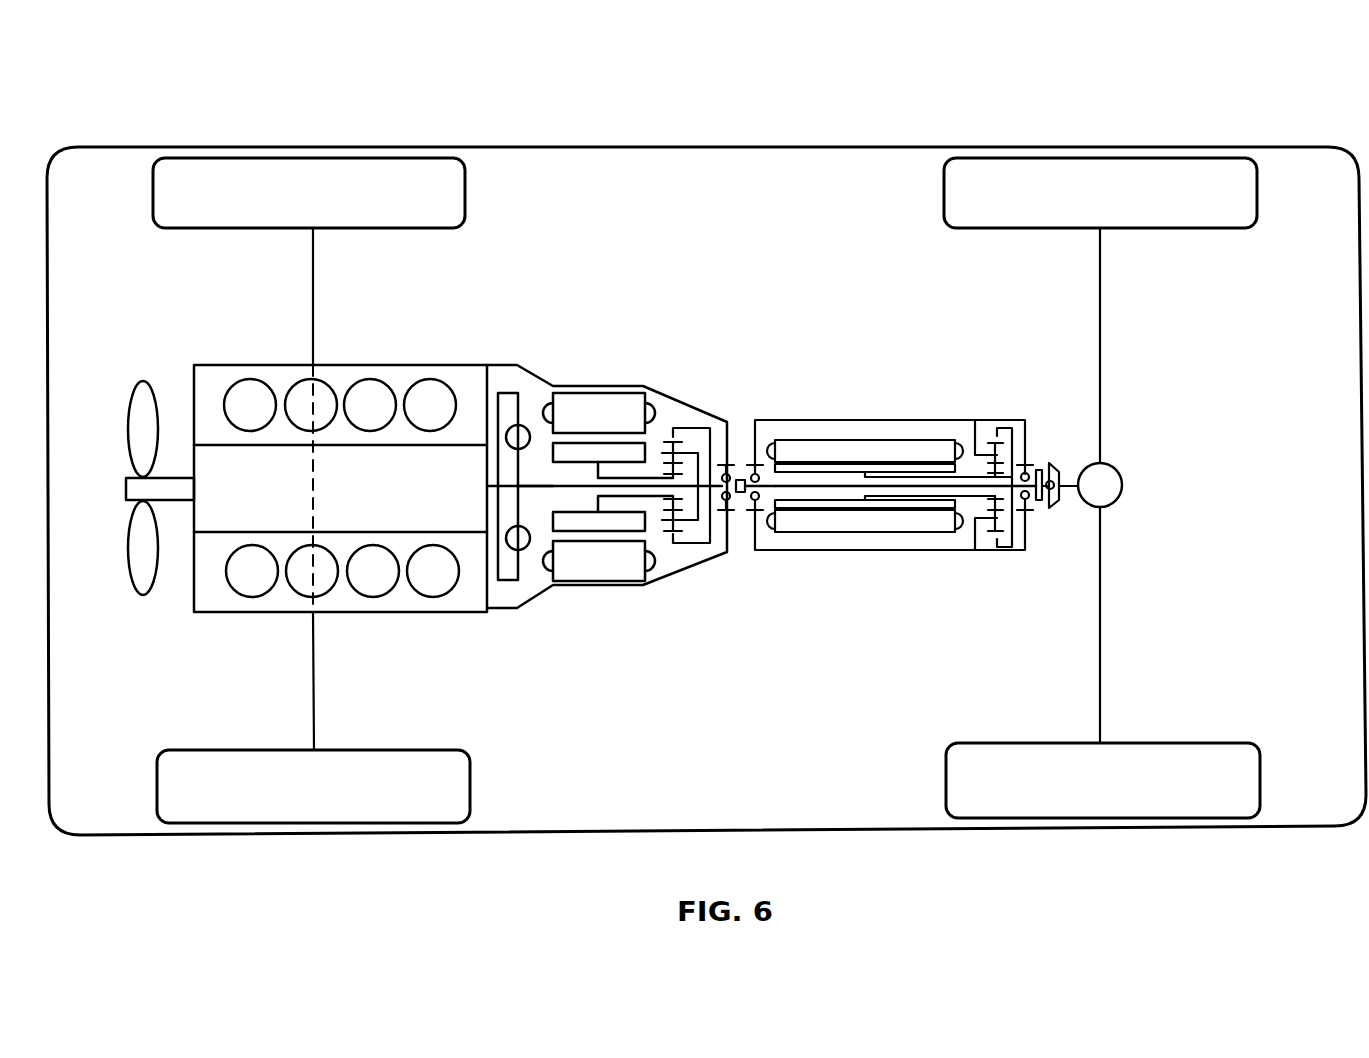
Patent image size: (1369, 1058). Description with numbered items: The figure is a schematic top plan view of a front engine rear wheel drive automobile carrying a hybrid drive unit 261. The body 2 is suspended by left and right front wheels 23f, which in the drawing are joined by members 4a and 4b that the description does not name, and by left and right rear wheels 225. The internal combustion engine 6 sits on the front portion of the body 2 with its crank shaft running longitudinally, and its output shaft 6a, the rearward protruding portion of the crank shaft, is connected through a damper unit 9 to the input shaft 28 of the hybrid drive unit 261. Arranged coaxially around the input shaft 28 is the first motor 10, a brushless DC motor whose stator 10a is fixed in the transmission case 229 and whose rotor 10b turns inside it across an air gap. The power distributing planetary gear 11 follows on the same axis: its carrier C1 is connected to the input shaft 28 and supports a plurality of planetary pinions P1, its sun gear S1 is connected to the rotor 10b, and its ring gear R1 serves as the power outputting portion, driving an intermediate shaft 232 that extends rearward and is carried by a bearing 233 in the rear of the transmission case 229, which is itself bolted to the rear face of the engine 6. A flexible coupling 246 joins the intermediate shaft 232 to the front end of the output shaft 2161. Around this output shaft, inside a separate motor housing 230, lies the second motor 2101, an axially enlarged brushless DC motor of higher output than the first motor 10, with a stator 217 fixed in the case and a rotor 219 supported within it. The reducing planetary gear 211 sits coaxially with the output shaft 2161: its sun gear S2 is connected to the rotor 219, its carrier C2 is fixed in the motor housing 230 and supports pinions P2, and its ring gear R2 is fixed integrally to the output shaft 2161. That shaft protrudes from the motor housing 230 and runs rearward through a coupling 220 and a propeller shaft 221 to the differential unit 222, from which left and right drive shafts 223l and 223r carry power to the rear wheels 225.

The power distributing planetary gear 11 is at (678, 420).
The body 2 is at (722, 146).
The front wheels 23f is at (462, 188).
The rear wheels 225 is at (1252, 190).
The front drive shaft 4b is at (314, 275).
The front drive shaft 4a is at (315, 672).
The right drive shaft 223r is at (1101, 282).
The left drive shaft 223l is at (1101, 630).
The internal combustion engine 6 is at (405, 365).
The output shaft 6a is at (496, 485).
The damper unit 9 is at (508, 393).
The transmission case 229 is at (530, 373).
The input shaft 28 is at (542, 483).
The first motor 10 is at (593, 378).
The stator 10a is at (588, 571).
The rotor 10b is at (635, 522).
The sun gear S1 is at (665, 498).
The planetary pinions P1 is at (683, 525).
The ring gear R1 is at (712, 530).
The carrier C1 is at (713, 517).
The intermediate shaft 232 is at (726, 465).
The bearing 233 is at (729, 515).
The flexible coupling 246 is at (755, 440).
The motor housing 230 is at (953, 420).
The second motor 2101 is at (887, 410).
The stator 217 is at (812, 448).
The rotor 219 is at (850, 470).
The output shaft 2161 is at (856, 500).
The reducing planetary gear 211 is at (993, 420).
The sun gear S2 is at (1003, 490).
The pinions P2 is at (996, 521).
The ring gear R2 is at (1013, 547).
The carrier C2 is at (974, 540).
The coupling 220 is at (1039, 467).
The propeller shaft 221 is at (1064, 478).
The differential unit 222 is at (1122, 483).
The hybrid drive unit 261 is at (757, 328).